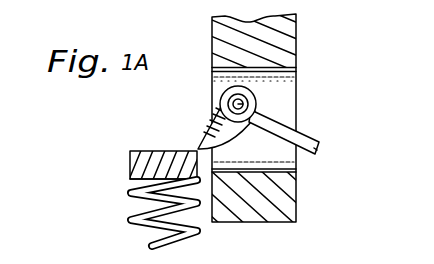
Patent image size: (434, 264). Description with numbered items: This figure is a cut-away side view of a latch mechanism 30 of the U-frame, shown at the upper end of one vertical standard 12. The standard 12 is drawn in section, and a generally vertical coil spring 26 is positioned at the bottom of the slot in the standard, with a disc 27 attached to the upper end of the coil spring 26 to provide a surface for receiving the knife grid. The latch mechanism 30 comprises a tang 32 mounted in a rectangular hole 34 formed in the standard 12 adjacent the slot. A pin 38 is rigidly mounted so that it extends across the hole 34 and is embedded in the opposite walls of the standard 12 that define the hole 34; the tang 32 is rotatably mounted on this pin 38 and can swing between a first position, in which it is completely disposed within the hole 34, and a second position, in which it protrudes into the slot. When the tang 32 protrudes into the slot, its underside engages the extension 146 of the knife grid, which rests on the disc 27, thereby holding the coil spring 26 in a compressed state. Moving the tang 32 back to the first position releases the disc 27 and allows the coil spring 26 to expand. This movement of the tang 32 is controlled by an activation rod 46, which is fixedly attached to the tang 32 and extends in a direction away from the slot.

The vertical standard 12 is at (297, 198).
The rectangular hole 34 is at (278, 153).
The tang 32 is at (210, 128).
The activation rod 46 is at (297, 136).
The pin 38 is at (247, 104).
The latch mechanism 30 is at (208, 100).
The disc 27 is at (131, 178).
The extension 146 is at (132, 151).
The coil spring 26 is at (130, 196).